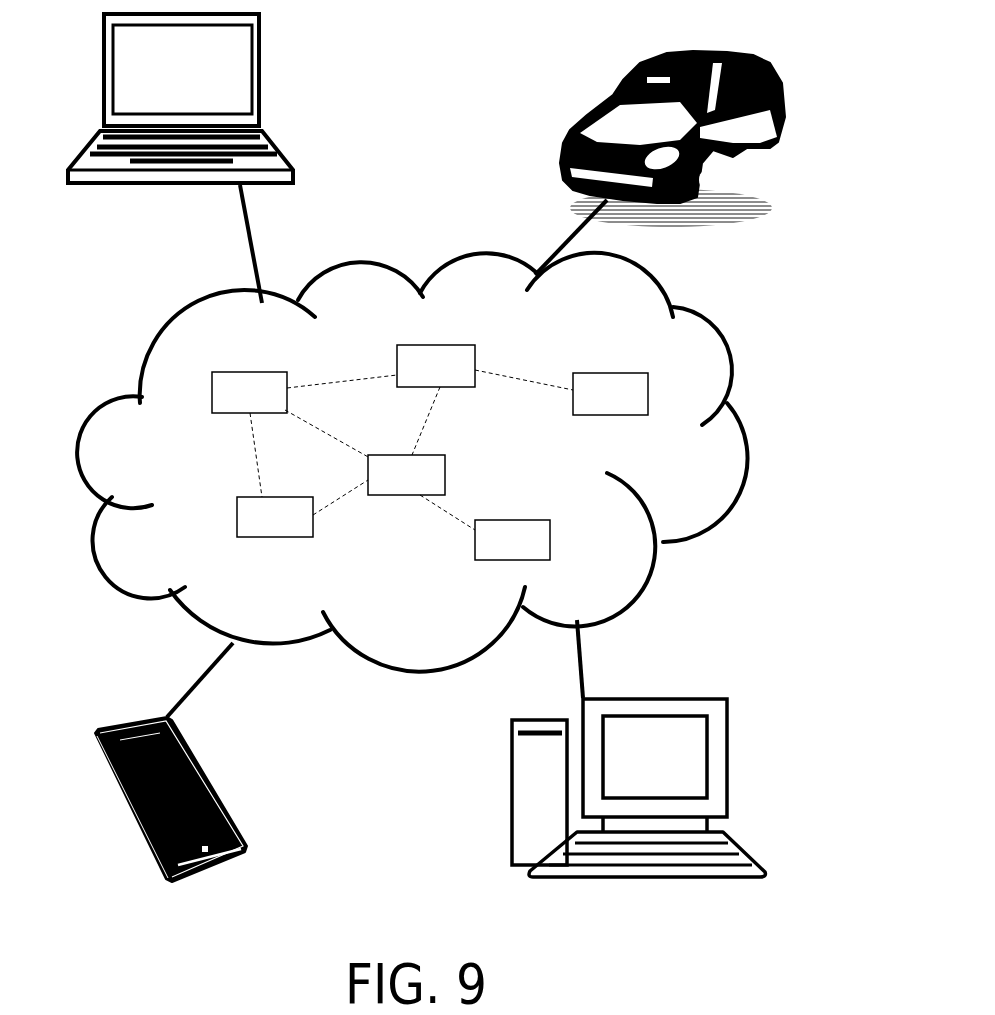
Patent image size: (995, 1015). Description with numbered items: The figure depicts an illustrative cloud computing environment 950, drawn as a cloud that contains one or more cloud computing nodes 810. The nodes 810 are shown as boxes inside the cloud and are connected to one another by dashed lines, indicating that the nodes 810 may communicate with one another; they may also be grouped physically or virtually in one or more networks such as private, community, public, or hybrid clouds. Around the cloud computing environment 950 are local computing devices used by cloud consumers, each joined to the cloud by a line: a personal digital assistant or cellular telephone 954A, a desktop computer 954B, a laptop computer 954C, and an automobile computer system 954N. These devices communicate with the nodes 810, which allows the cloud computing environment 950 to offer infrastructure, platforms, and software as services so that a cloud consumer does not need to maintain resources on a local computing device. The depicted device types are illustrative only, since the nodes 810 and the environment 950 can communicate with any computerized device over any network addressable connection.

The laptop computer 954C is at (103, 85).
The automobile computer system 954N is at (570, 153).
The cloud computing environment 950 is at (138, 377).
The cloud computing nodes 810 is at (430, 452).
The personal digital assistant (PDA) or cellular telephone 954A is at (98, 735).
The desktop computer 954B is at (512, 833).